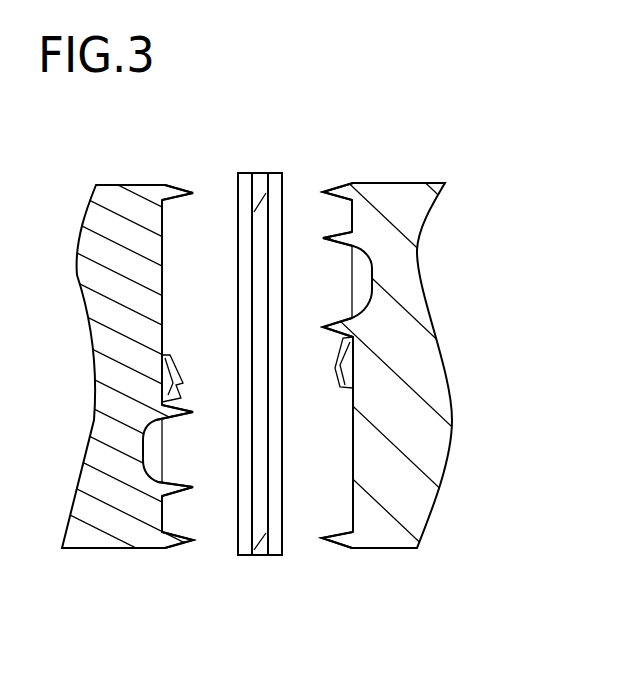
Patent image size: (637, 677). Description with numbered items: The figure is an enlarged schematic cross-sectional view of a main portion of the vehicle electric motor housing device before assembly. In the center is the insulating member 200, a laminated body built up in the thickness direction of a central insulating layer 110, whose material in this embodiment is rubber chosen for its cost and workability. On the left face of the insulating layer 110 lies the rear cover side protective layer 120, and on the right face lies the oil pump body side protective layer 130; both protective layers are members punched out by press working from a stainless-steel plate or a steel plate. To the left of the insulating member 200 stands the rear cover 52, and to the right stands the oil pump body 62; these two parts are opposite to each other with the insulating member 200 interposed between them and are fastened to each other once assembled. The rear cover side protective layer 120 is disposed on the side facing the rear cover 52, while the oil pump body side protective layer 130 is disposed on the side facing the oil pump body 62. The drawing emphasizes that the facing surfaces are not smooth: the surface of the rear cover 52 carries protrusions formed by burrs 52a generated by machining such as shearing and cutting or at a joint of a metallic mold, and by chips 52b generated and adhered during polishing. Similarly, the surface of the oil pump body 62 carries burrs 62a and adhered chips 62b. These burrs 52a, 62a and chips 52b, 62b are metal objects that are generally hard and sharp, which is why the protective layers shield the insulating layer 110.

The insulating member 200 is at (257, 293).
The insulating layer 110 is at (258, 192).
The rear cover side protective layer 120 is at (245, 192).
The oil pump body side protective layer 130 is at (273, 192).
The rear cover 52 is at (122, 430).
The burrs 52a is at (175, 175).
The chips 52b is at (178, 373).
The oil pump body 62 is at (408, 322).
The burrs 62a is at (340, 180).
The chips 62b is at (340, 368).